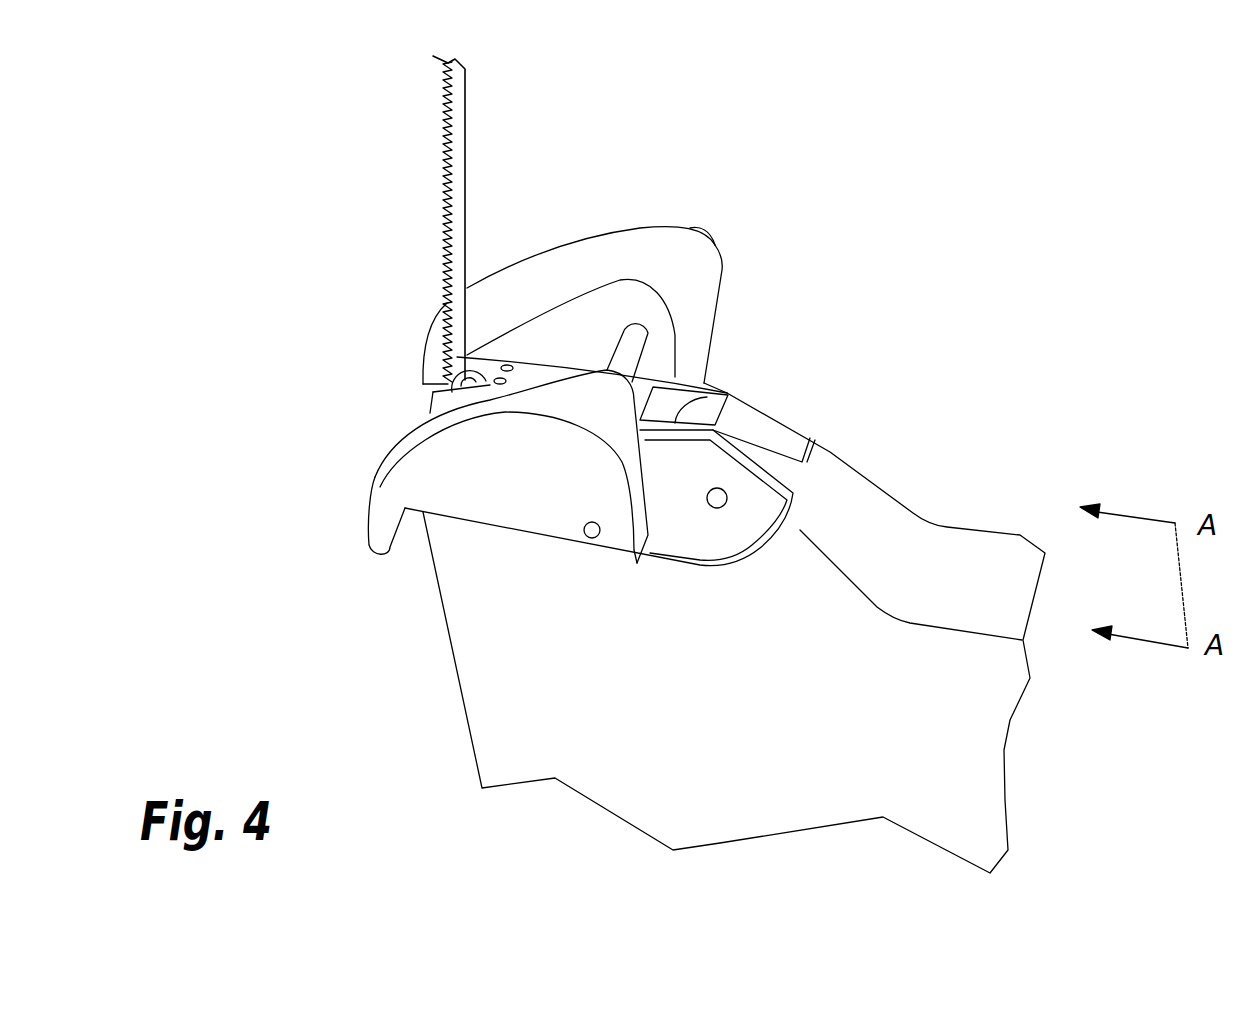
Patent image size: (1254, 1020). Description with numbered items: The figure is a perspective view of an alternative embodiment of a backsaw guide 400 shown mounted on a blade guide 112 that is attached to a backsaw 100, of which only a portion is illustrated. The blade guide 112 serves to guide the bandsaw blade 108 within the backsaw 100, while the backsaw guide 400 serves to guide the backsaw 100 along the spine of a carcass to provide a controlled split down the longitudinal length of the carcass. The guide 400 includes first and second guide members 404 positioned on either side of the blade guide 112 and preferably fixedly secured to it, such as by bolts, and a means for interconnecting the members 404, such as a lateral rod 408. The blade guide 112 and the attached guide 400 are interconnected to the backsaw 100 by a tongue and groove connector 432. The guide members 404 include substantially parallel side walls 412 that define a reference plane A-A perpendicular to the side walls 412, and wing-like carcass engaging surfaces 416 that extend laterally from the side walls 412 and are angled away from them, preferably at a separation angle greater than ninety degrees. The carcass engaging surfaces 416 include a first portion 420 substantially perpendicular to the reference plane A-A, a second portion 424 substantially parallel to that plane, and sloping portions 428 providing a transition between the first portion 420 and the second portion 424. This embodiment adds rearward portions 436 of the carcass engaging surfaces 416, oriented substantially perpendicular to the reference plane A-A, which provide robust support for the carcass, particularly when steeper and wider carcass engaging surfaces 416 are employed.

The backsaw 100 is at (925, 730).
The bandsaw blade 108 is at (465, 108).
The blade guide 112 is at (492, 362).
The backsaw guide 400 is at (283, 492).
The guide members 404 is at (450, 488).
The lateral rod 408 is at (633, 348).
The side walls 412 is at (605, 317).
The carcass engaging surfaces 416 is at (517, 277).
The first portion 420 is at (425, 353).
The second portion 424 is at (675, 252).
The sloping portions 428 is at (560, 267).
The tongue and groove connector 432 is at (737, 423).
The rearward portions 436 is at (633, 480).